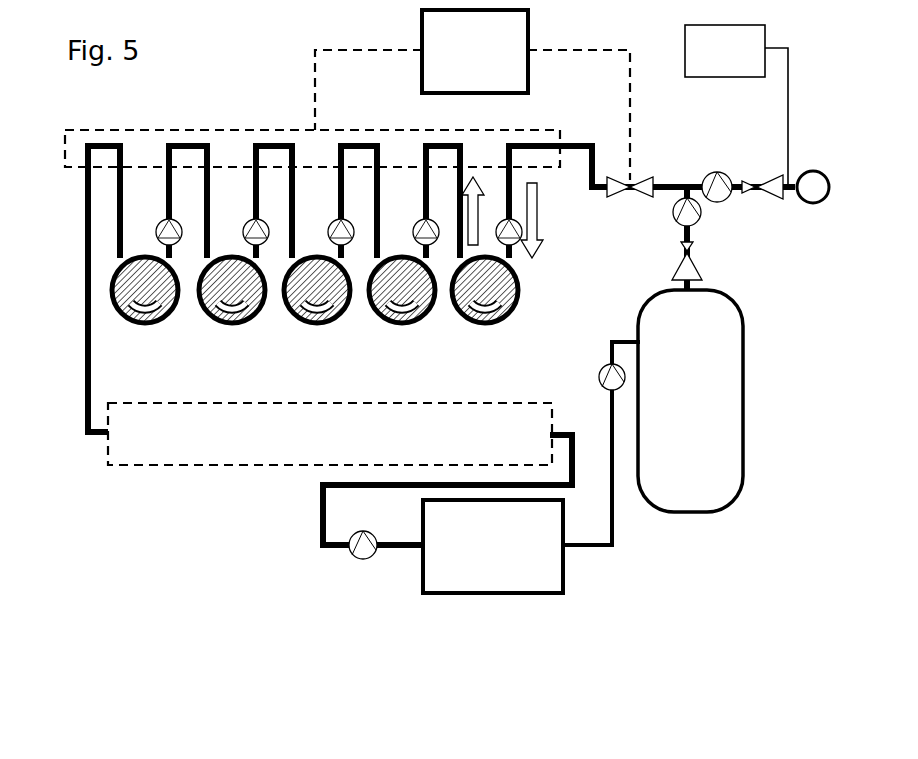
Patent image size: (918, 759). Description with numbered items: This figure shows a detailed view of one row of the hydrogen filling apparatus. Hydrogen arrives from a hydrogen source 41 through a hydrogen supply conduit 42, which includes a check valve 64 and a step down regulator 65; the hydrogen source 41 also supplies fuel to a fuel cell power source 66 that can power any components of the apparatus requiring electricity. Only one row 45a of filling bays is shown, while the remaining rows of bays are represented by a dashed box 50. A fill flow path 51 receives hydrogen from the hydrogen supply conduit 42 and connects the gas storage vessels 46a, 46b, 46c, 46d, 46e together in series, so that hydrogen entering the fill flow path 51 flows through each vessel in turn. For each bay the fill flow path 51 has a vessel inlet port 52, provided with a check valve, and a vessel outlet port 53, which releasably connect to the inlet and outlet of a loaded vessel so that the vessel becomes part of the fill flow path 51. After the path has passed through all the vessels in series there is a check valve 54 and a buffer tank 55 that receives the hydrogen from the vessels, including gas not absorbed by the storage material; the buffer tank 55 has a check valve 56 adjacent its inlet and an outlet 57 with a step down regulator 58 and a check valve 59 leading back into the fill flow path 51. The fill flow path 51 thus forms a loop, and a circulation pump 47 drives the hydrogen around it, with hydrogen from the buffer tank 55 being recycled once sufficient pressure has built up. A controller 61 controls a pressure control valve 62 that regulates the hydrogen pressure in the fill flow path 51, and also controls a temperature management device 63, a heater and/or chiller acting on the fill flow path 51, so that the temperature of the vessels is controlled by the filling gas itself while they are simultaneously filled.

The hydrogen source 41 is at (813, 192).
The hydrogen supply conduit 42 is at (797, 178).
The row of filling bays 45a is at (74, 285).
The gas storage vessel 46a is at (490, 310).
The gas storage vessel 46b is at (407, 310).
The gas storage vessel 46c is at (322, 310).
The gas storage vessel 46d is at (237, 310).
The gas storage vessel 46e is at (150, 310).
The circulation pump 47 is at (475, 562).
The dashed box 50 is at (183, 437).
The fill flow path 51 is at (83, 388).
The vessel inlet port 52 is at (505, 265).
The vessel outlet port 53 is at (452, 260).
The check valve 54 is at (352, 550).
The buffer tank 55 is at (672, 417).
The check valve 56 is at (606, 379).
The outlet 57 is at (688, 283).
The step down regulator 58 is at (690, 273).
The check valve 59 is at (700, 212).
The controller 61 is at (457, 70).
The pressure control valve 62 is at (647, 179).
The temperature management device 63 is at (222, 128).
The check valve 64 is at (714, 175).
The step down regulator 65 is at (771, 172).
The fuel cell power source 66 is at (707, 65).